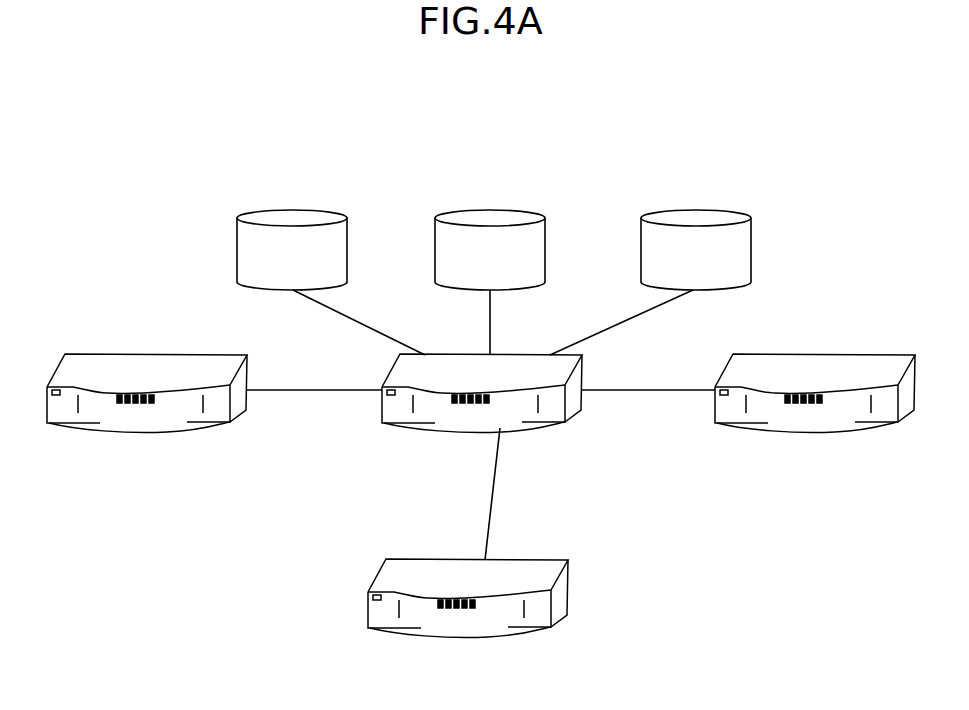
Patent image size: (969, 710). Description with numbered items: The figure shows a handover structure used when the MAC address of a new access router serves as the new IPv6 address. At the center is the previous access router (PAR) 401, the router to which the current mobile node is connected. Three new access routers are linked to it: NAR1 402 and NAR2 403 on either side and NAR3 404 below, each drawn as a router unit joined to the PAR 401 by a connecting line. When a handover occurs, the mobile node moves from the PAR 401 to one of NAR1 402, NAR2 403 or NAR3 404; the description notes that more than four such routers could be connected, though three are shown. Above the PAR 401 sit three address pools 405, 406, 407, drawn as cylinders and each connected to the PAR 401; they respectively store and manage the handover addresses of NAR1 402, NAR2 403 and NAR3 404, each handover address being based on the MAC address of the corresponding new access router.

The previous access router (PAR) 401 is at (382, 418).
The new access router NAR1 402 is at (137, 354).
The new access router NAR2 403 is at (838, 354).
The new access router NAR3 404 is at (568, 586).
The address pool for NAR_1 405 is at (237, 247).
The address pool for NAR_2 406 is at (520, 290).
The address pool for NAR_3 407 is at (752, 247).